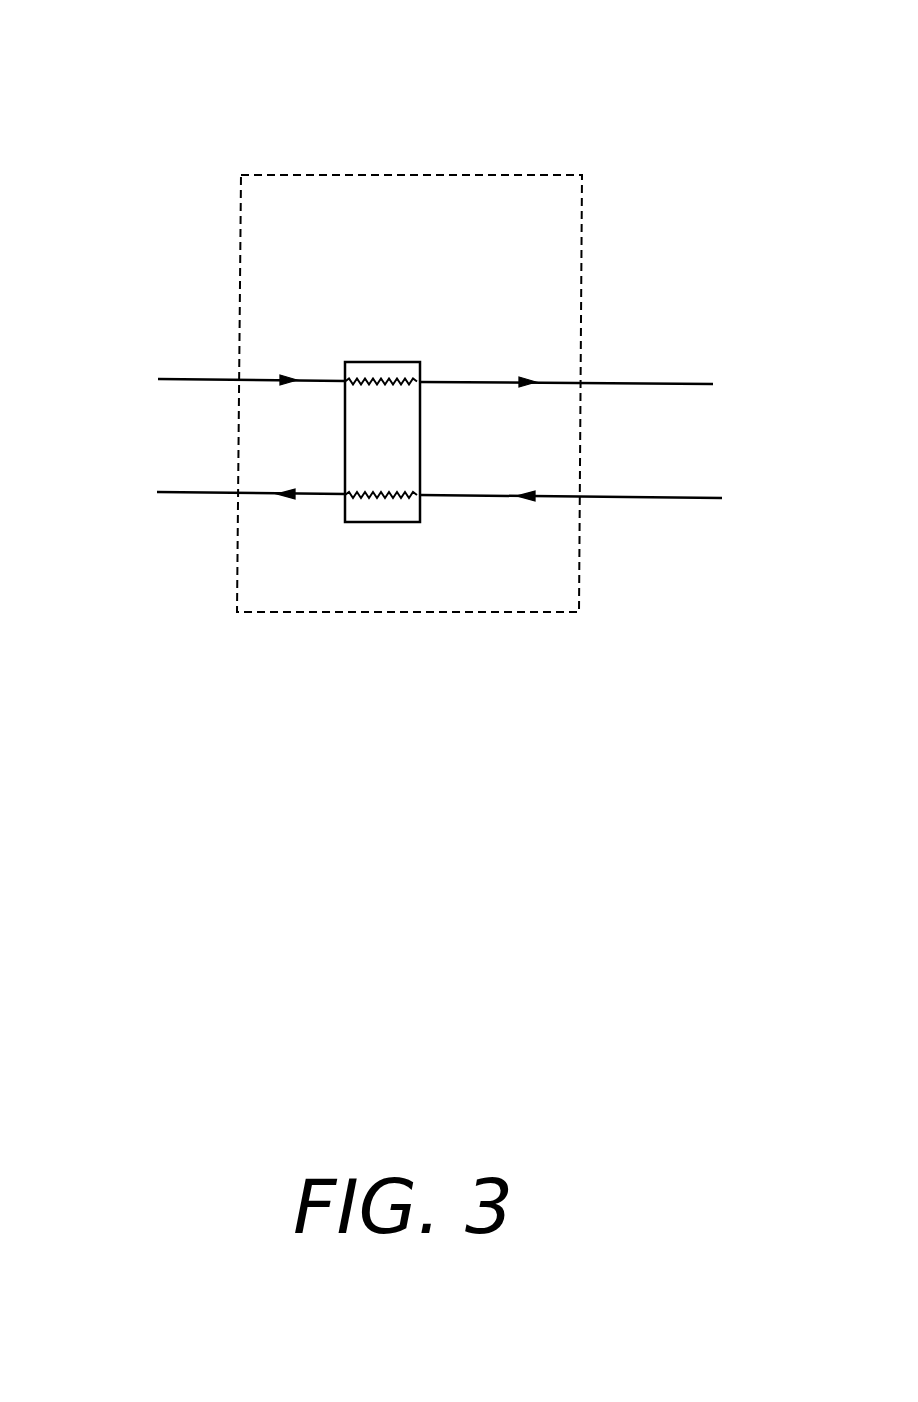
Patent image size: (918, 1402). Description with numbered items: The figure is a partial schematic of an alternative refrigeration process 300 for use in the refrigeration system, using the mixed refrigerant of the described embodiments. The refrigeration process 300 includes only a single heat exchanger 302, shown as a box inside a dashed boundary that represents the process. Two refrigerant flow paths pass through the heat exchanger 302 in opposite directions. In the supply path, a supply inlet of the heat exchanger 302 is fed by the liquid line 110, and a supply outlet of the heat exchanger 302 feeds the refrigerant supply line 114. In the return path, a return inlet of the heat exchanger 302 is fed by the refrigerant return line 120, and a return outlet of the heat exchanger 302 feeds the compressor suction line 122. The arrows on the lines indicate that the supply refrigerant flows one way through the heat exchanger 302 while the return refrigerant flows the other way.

The refrigeration process 300 is at (365, 151).
The heat exchanger 302 is at (377, 362).
The liquid line 110 is at (210, 378).
The refrigerant supply line 114 is at (652, 383).
The refrigerant return line 120 is at (650, 498).
The compressor suction line 122 is at (207, 492).